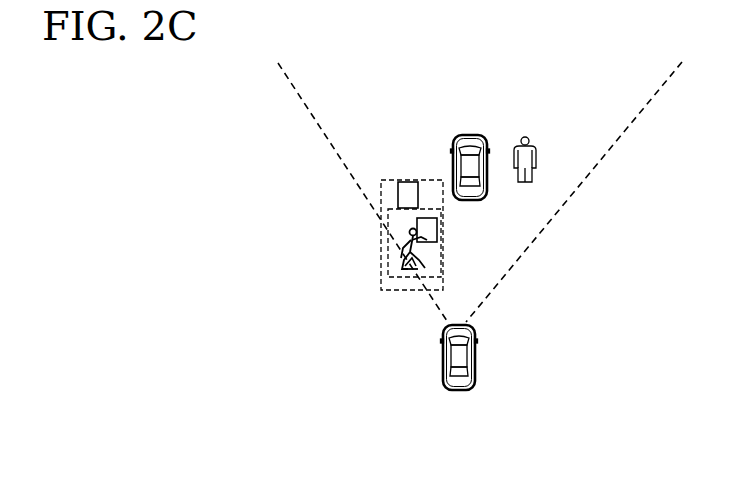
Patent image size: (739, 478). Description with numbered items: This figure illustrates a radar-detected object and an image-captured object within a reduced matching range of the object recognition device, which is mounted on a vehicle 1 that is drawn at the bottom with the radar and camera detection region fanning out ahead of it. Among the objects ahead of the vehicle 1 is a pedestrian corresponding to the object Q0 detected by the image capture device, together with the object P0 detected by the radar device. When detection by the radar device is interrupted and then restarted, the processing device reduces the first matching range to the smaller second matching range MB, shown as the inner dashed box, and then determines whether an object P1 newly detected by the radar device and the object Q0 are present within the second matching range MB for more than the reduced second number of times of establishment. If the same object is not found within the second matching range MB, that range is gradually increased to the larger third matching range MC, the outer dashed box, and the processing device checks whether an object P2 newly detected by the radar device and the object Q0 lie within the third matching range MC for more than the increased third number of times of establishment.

The vehicle 1 is at (478, 358).
The third matching range MC is at (388, 178).
The second matching range MB is at (389, 206).
The object detected by the radar device P0 is at (402, 259).
The object newly detected by the radar device P1 is at (437, 232).
The object newly detected by the radar device P2 is at (405, 181).
The object detected by the image capture device Q0 is at (410, 238).